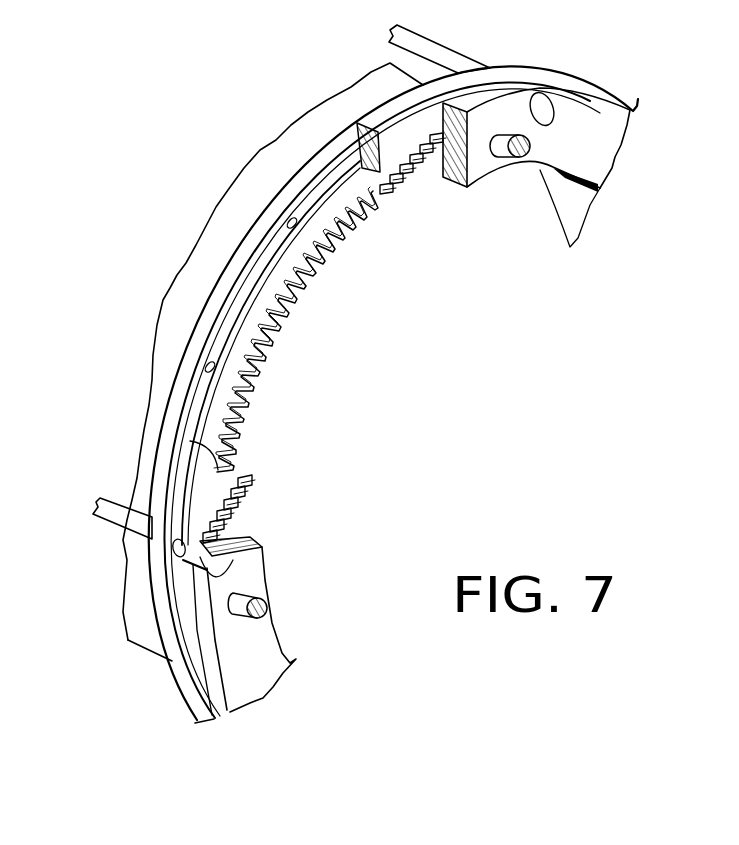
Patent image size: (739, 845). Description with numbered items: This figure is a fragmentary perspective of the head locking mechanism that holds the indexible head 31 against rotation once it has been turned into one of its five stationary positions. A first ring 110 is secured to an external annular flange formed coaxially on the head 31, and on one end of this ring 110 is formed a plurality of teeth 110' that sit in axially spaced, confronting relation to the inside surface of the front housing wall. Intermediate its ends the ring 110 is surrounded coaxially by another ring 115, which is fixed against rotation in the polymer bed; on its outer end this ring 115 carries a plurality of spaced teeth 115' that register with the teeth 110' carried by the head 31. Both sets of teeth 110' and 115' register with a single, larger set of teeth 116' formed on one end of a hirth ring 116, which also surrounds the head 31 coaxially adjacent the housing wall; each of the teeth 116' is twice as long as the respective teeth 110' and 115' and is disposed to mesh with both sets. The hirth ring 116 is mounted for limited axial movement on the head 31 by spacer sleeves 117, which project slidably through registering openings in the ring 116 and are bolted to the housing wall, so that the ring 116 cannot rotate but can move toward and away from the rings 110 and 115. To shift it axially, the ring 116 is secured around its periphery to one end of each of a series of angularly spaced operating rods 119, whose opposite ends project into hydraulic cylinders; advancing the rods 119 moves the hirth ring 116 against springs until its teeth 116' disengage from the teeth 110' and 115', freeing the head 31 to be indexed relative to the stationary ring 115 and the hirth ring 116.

The head 31 is at (153, 342).
The first ring 110 is at (267, 426).
The teeth 110' is at (356, 241).
The ring 115 is at (393, 369).
The teeth 115' is at (221, 419).
The hirth ring 116 is at (288, 629).
The teeth 116' is at (441, 312).
The spacer sleeves 117 is at (532, 143).
The operating rods 119 is at (390, 38).